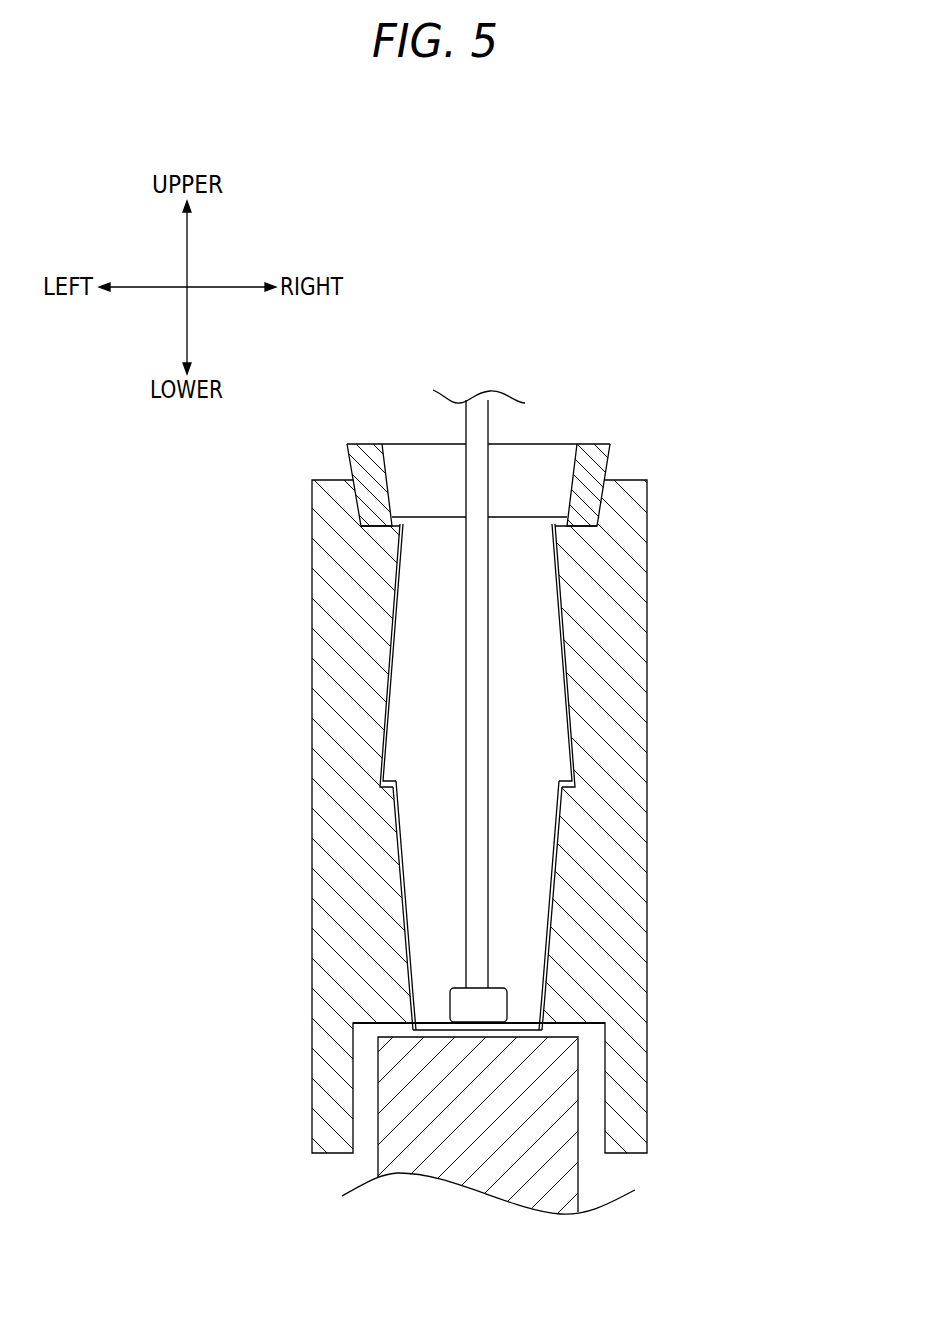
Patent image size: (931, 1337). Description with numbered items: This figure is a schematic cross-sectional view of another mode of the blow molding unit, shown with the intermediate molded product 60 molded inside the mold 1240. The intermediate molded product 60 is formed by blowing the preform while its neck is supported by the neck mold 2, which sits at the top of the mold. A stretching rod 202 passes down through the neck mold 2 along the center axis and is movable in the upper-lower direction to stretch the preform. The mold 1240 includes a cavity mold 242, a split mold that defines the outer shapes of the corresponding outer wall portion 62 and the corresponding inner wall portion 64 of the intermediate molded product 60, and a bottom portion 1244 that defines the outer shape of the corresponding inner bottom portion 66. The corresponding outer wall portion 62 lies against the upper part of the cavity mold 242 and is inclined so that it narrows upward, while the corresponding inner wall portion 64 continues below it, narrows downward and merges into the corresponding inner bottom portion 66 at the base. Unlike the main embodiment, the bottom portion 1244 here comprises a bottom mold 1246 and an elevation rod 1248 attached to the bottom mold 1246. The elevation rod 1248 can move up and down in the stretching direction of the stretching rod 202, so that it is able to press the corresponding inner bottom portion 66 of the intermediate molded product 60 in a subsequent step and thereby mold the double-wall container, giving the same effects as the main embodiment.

The neck mold 2 is at (607, 458).
The stretching rod 202 is at (490, 438).
The mold 1240 is at (465, 843).
The intermediate molded product 60 is at (470, 777).
The corresponding outer wall portion 62 is at (392, 592).
The corresponding inner wall portion 64 is at (392, 850).
The corresponding inner bottom portion 66 is at (432, 1020).
The cavity mold 242 is at (637, 847).
The bottom portion 1244 is at (496, 1103).
The bottom mold 1246 is at (543, 1092).
The elevation rod 1248 is at (540, 1030).